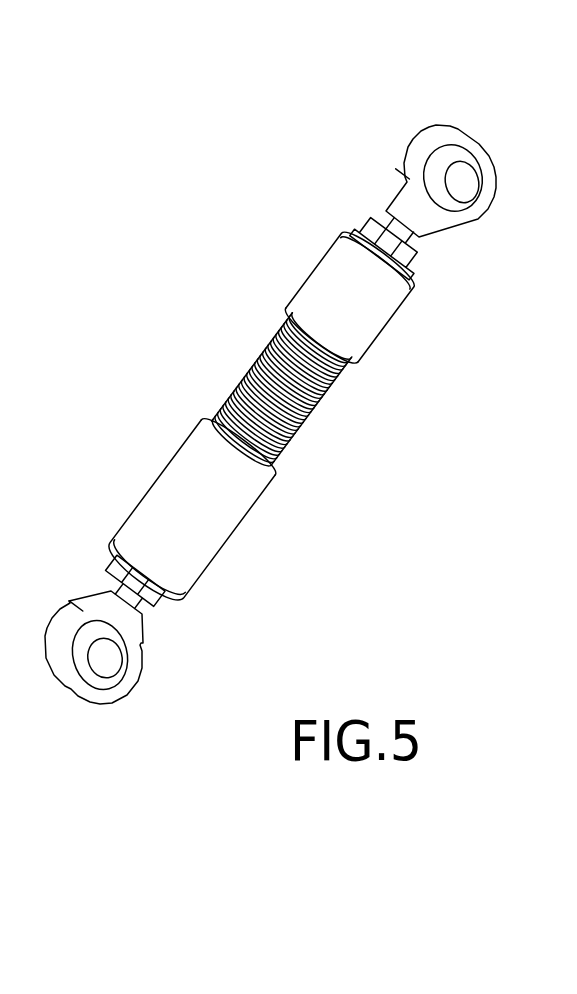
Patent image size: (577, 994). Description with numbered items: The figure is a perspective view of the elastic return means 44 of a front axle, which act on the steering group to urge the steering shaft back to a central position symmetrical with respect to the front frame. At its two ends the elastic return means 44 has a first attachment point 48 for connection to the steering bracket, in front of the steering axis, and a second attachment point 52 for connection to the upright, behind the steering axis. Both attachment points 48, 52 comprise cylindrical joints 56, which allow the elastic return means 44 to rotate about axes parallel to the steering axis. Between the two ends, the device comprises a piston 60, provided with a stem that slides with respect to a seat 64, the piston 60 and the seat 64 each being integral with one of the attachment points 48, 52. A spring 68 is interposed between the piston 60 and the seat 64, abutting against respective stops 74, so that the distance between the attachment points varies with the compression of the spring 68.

The elastic return means 44 is at (240, 238).
The first attachment point 48 is at (473, 238).
The second attachment point 52 is at (99, 716).
The cylindrical joint 56 is at (277, 417).
The piston 60 is at (363, 280).
The seat 64 is at (181, 524).
The spring 68 is at (279, 392).
The stops 74 is at (280, 390).